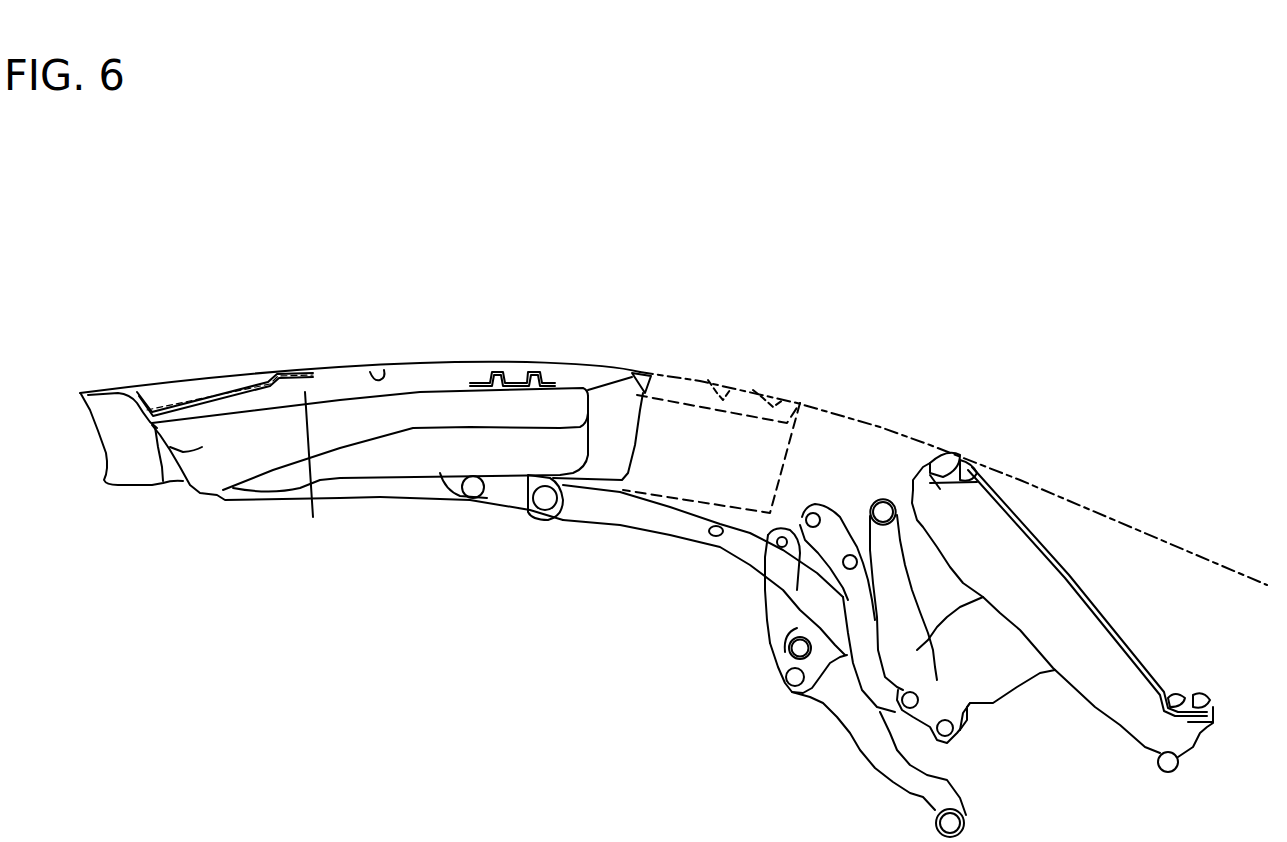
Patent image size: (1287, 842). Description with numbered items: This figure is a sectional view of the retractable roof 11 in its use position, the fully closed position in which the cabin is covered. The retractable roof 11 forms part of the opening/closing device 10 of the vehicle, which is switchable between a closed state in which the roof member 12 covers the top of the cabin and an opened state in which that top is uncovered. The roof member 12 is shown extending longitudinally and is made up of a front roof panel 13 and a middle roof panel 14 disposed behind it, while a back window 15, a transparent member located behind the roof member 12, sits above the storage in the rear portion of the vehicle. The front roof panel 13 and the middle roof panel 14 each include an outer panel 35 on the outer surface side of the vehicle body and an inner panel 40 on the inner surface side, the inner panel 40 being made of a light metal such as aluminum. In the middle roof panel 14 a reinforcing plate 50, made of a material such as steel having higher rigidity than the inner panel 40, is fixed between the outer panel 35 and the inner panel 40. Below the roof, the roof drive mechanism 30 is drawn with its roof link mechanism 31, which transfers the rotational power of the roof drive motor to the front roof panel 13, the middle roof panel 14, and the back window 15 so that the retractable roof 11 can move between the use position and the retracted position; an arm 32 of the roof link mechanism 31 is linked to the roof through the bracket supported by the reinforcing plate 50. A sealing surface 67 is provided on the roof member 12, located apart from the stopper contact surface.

The opening/closing device 10 is at (912, 298).
The retractable roof 11 is at (546, 355).
The roof member 12 is at (300, 365).
The front roof panel 13 is at (211, 373).
The middle roof panel 14 is at (755, 390).
The back window 15 is at (1113, 628).
The roof drive mechanism 30 is at (830, 742).
The roof link mechanism 31 is at (727, 567).
The arm 32 is at (600, 527).
The outer panel 35 is at (378, 377).
The inner panel 40 is at (786, 403).
The reinforcing plate 50 is at (480, 381).
The sealing surface 67 is at (644, 390).